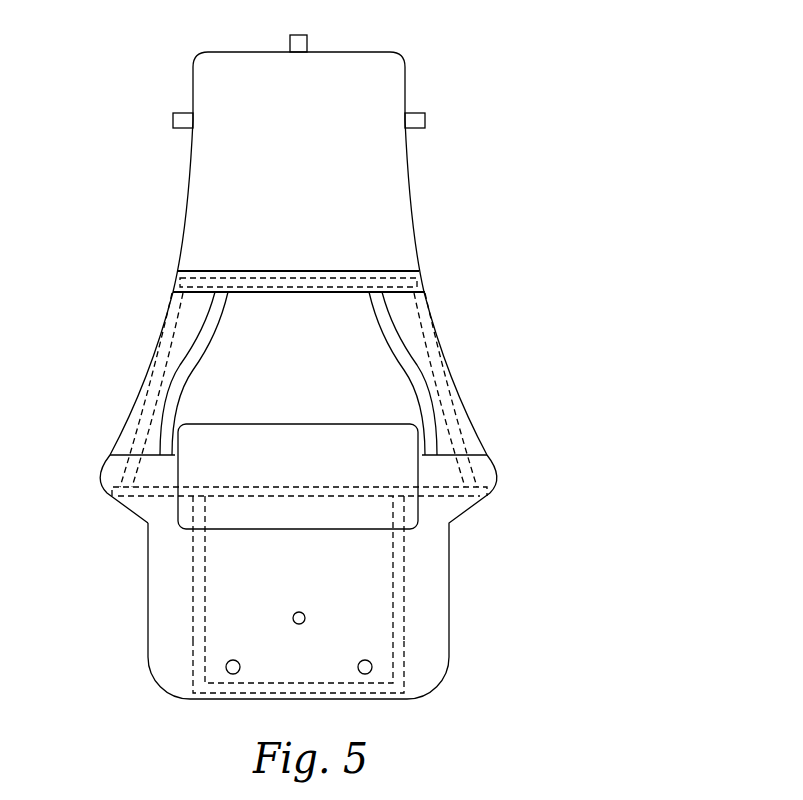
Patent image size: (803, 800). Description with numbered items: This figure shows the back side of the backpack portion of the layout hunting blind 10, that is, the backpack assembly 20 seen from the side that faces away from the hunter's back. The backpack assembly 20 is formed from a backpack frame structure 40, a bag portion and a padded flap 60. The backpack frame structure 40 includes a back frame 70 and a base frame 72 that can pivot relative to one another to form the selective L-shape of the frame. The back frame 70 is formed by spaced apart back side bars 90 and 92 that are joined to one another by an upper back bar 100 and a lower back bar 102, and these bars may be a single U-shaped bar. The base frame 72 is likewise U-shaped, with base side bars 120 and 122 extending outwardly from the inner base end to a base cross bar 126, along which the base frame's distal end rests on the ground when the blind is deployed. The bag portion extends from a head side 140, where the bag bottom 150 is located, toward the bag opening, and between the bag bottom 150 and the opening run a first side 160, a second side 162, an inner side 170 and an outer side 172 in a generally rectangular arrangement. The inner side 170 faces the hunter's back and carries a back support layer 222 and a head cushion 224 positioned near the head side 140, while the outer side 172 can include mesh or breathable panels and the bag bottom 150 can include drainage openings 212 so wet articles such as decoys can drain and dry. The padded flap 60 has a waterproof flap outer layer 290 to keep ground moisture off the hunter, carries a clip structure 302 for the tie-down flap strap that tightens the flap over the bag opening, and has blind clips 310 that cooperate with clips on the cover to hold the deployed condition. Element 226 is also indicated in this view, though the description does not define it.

The layout hunting blind 10 is at (530, 226).
The backpack assembly 20 is at (548, 367).
The backpack frame structure 40 is at (412, 605).
The padded flap 60 is at (452, 72).
The back frame 70 is at (140, 395).
The base frame 72 is at (414, 642).
The back side bar 90 is at (472, 438).
The back side bar 92 is at (165, 322).
The upper back bar 100 is at (355, 278).
The lower back bar 102 is at (153, 493).
The base side bar 120 is at (407, 655).
The base side bar 122 is at (192, 668).
The base cross bar 126 is at (248, 693).
The head side 140 is at (175, 600).
The bag bottom 150 is at (257, 630).
The first side 160 is at (450, 568).
The second side 162 is at (148, 560).
The inner side 170 is at (321, 359).
The outer side 172 is at (370, 700).
The drainage opening 212 is at (304, 613).
The back support layer 222 is at (340, 399).
The head cushion 224 is at (288, 457).
The flange 226 is at (570, 274).
The flap outer layer 290 is at (262, 127).
The clip structure 302 is at (307, 42).
The blind clip 310 is at (180, 128).